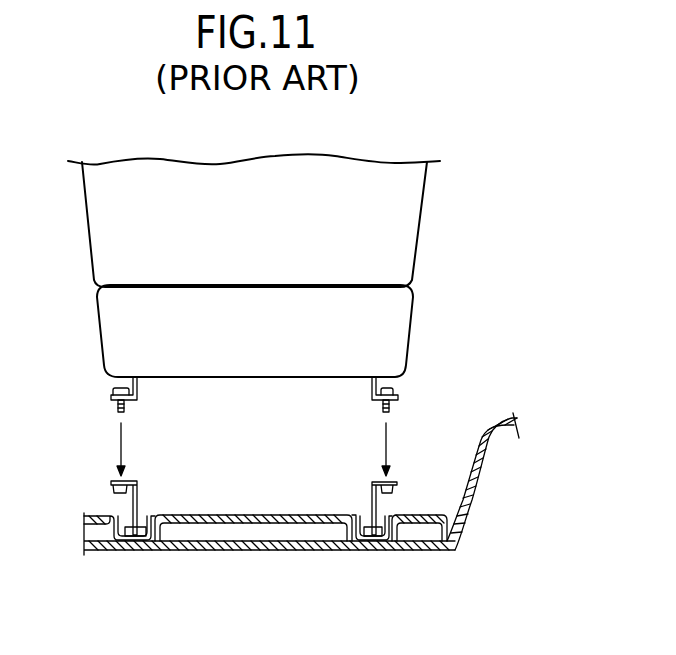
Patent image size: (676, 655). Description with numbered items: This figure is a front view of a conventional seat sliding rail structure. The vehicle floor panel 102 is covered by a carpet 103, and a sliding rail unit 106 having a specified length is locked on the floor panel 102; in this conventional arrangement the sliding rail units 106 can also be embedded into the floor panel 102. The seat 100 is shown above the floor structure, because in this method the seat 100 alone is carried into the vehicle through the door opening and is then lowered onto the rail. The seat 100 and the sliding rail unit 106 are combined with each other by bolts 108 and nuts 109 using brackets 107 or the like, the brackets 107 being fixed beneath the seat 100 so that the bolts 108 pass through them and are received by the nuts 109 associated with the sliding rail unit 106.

The seat 100 is at (427, 203).
The floor panel 102 is at (262, 552).
The carpet 103 is at (262, 515).
The sliding rail unit 106 is at (377, 514).
The bracket 107 is at (371, 392).
The bolt 108 is at (394, 387).
The nut 109 is at (399, 484).